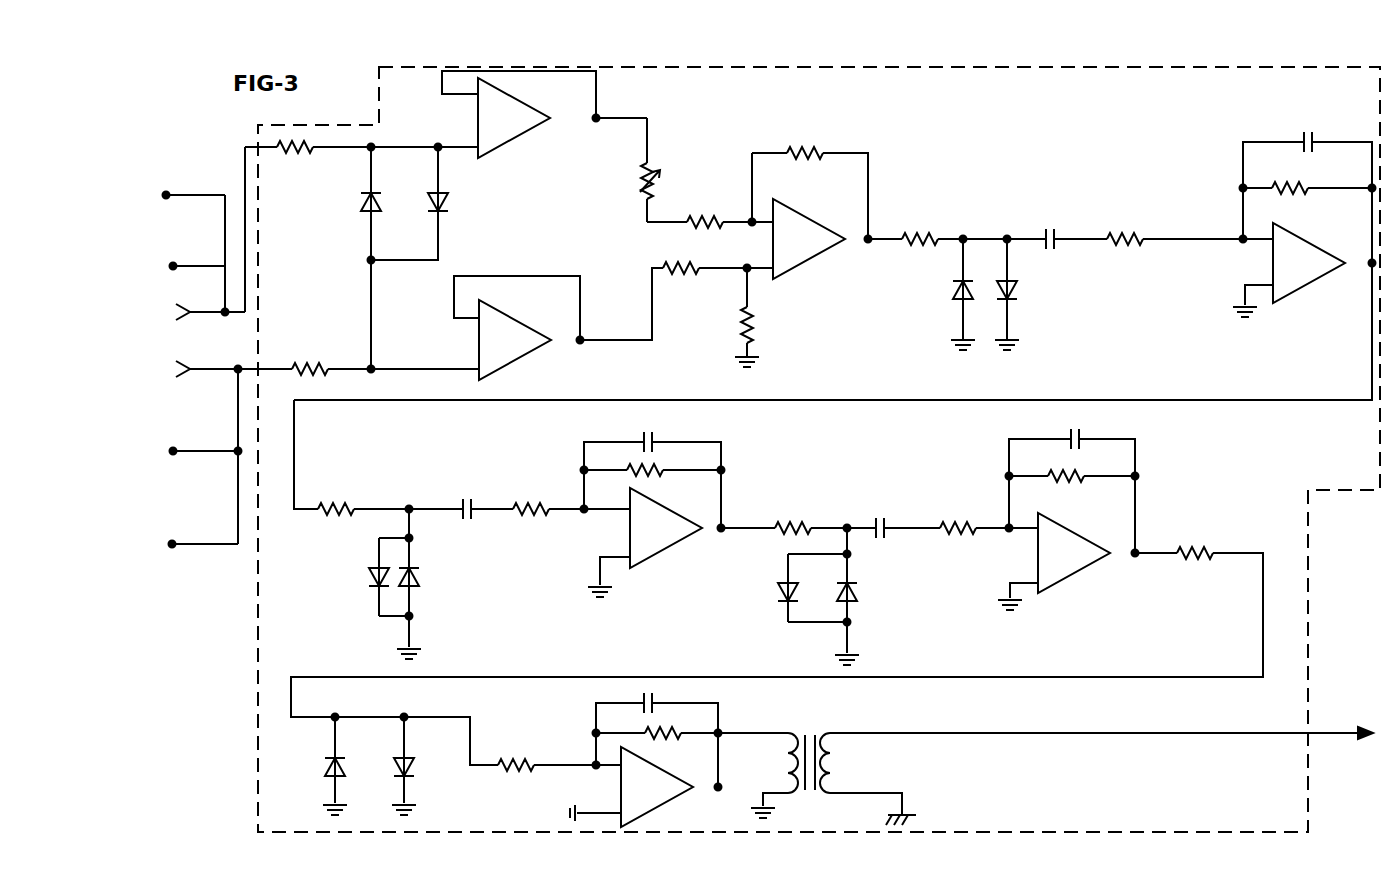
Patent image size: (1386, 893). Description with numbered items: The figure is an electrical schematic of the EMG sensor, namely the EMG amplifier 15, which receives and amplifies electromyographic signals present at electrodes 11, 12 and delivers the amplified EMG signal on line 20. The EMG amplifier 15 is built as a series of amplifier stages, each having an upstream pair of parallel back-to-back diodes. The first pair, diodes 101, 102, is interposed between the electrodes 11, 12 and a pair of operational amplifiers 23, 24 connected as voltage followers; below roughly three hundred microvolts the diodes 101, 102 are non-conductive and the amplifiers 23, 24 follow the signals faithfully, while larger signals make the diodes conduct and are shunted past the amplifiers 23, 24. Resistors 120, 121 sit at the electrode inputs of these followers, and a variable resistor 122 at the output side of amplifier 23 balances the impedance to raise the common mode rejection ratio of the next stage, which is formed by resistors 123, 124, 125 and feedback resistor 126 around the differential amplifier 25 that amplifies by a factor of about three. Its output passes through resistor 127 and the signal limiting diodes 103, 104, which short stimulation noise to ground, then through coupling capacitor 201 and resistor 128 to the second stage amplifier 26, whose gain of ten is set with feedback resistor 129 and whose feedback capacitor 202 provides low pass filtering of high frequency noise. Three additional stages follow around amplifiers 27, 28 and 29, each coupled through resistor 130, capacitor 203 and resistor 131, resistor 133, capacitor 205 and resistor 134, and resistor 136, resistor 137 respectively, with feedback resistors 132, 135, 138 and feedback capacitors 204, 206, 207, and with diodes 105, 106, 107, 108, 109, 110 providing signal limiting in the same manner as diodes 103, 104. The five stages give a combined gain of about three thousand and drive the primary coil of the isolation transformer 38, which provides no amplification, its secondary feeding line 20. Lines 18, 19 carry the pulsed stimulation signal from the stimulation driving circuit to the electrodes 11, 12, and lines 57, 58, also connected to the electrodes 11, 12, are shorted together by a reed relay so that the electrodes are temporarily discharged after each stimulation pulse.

The electrode 11 is at (198, 314).
The electrode 12 is at (204, 371).
The EMG amplifier 15 is at (258, 605).
The line 18 is at (196, 266).
The line 19 is at (200, 452).
The line 20 is at (1340, 734).
The operational amplifier 23 is at (520, 148).
The operational amplifier 24 is at (525, 368).
The differential amplifier 25 is at (805, 216).
The second stage amplifier 26 is at (1297, 298).
The amplifier 27 is at (682, 560).
The amplifier 28 is at (1072, 585).
The amplifier 29 is at (678, 798).
The transformer 38 is at (810, 730).
The line 57 is at (195, 194).
The line 58 is at (187, 545).
The diode 101 is at (361, 204).
The diode 102 is at (447, 200).
The signal limiting diode 103 is at (954, 290).
The signal limiting diode 104 is at (1020, 290).
The diode 105 is at (369, 577).
The diode 106 is at (420, 577).
The diode 107 is at (776, 595).
The diode 108 is at (860, 593).
The diode 109 is at (330, 768).
The diode 110 is at (412, 766).
The resistor 120 is at (295, 150).
The resistor 121 is at (310, 366).
The variable resistor 122 is at (660, 185).
The resistor 123 is at (691, 229).
The resistor 124 is at (695, 272).
The resistor 125 is at (750, 320).
The resistor 126 is at (815, 154).
The resistor 127 is at (940, 238).
The resistor 128 is at (1135, 238).
The resistor 129 is at (1300, 192).
The resistor 130 is at (340, 508).
The resistor 131 is at (531, 506).
The resistor 132 is at (650, 478).
The resistor 133 is at (796, 524).
The resistor 134 is at (957, 526).
The resistor 135 is at (1060, 482).
The resistor 136 is at (1193, 548).
The resistor 137 is at (528, 761).
The resistor 138 is at (685, 736).
The coupling capacitor 201 is at (1058, 236).
The feedback capacitor 202 is at (1312, 138).
The capacitor 203 is at (468, 500).
The capacitor 204 is at (648, 431).
The capacitor 205 is at (882, 516).
The capacitor 206 is at (1086, 432).
The capacitor 207 is at (656, 700).